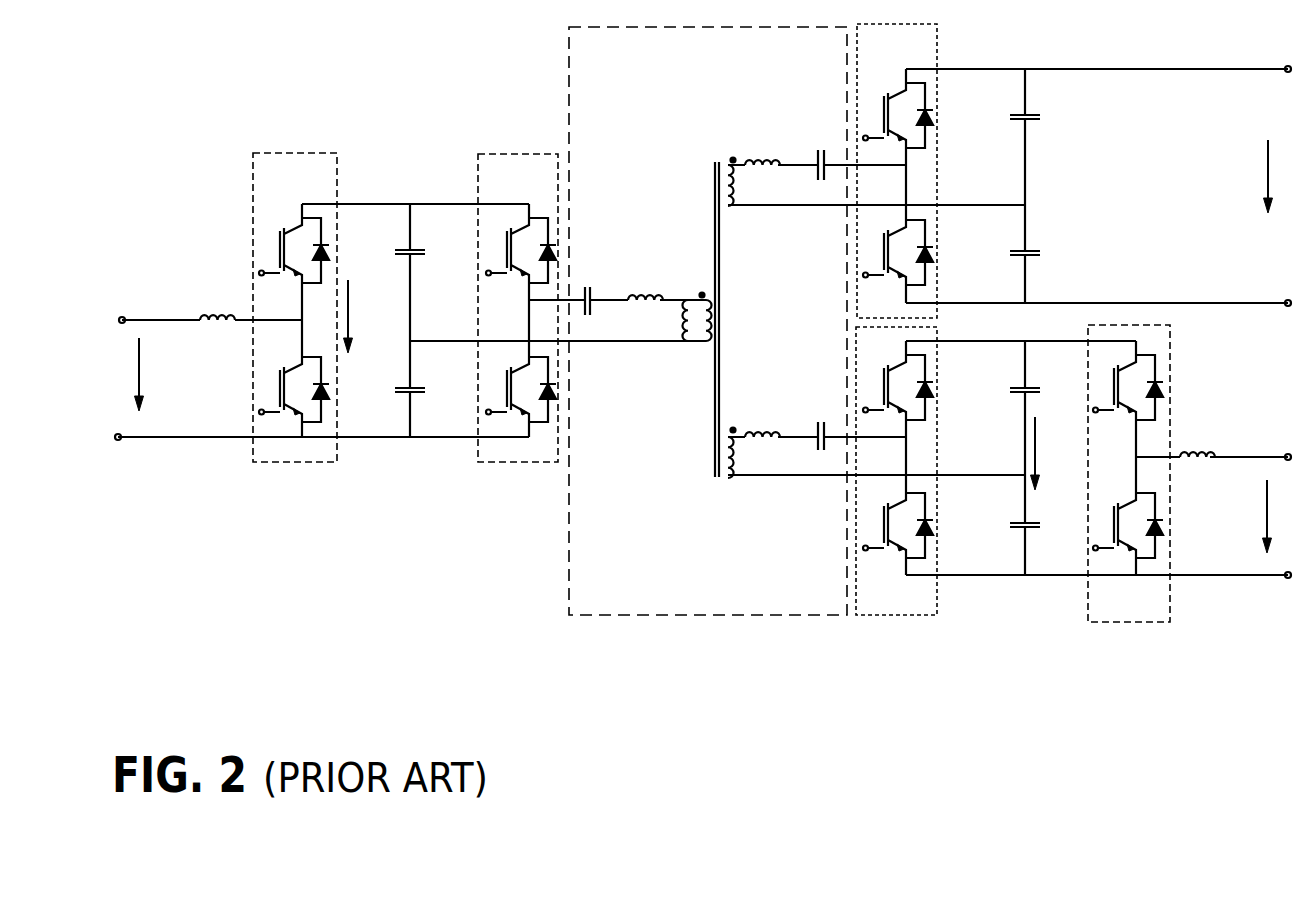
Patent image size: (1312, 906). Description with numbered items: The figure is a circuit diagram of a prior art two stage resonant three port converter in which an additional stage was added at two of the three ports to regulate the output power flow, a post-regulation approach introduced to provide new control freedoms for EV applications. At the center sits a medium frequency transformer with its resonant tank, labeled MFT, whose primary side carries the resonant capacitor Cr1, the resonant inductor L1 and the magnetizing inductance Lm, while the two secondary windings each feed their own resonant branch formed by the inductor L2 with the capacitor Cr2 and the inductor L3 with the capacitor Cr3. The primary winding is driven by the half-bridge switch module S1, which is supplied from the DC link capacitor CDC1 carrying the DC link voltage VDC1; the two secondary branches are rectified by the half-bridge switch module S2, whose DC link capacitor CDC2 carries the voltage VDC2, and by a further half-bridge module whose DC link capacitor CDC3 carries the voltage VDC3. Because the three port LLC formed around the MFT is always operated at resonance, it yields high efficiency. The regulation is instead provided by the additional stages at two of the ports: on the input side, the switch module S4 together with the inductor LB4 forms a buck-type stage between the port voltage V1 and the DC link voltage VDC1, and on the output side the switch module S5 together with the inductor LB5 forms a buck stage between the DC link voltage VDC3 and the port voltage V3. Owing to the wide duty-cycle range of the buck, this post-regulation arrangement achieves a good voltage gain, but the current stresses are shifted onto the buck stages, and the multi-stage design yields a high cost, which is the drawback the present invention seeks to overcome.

The input-side half-bridge switch module S4 is at (295, 307).
The primary-side half-bridge switch module S1 is at (518, 308).
The secondary-side half-bridge switch module S2 is at (897, 171).
The output-side half-bridge switch module S5 is at (1129, 473).
The input boost inductor LB4 is at (217, 301).
The output buck inductor LB5 is at (1197, 436).
The input voltage V1 is at (153, 374).
The output voltage V3 is at (1254, 516).
The DC link voltage VDC1 is at (371, 316).
The DC link voltage VDC2 is at (1247, 176).
The DC link voltage VDC3 is at (1058, 453).
The DC link capacitor CDC1 is at (427, 320).
The DC link capacitor CDC2 is at (1008, 186).
The DC link capacitor CDC3 is at (1008, 458).
The primary resonant capacitor Cr1 is at (596, 279).
The secondary resonant capacitor Cr2 is at (820, 145).
The secondary resonant capacitor Cr3 is at (820, 416).
The primary resonant inductor L1 is at (645, 280).
The secondary resonant inductor L2 is at (762, 141).
The secondary resonant inductor L3 is at (762, 413).
The magnetizing inductance Lm is at (680, 337).
The medium frequency transformer and resonant tank MFT is at (708, 321).